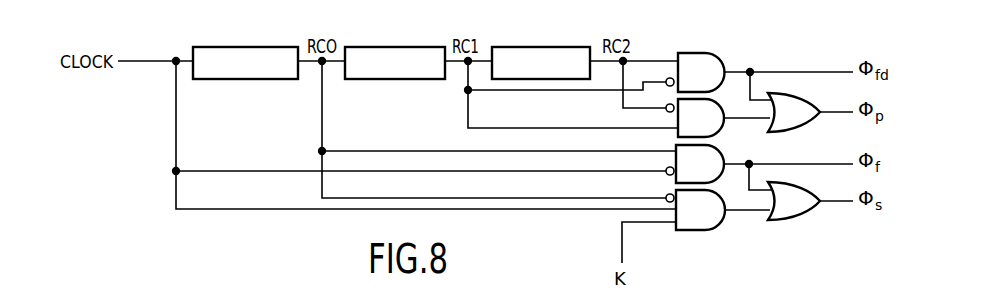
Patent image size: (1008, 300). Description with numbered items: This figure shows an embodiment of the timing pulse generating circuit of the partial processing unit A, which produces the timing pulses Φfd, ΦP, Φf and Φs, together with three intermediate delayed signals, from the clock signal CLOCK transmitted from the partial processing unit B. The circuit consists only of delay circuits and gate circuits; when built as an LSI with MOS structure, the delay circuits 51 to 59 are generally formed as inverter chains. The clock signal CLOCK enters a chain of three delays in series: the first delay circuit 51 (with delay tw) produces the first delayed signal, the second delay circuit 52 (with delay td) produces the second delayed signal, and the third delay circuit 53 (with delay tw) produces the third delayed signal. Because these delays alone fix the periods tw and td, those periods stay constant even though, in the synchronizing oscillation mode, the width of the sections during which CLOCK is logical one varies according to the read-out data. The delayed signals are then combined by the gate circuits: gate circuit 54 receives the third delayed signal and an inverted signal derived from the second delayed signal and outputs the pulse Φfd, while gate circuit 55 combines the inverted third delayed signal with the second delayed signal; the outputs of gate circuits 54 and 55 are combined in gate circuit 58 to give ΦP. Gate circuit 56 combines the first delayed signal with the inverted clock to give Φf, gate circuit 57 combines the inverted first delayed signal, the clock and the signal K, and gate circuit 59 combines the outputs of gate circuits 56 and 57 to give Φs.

The delay circuit 51 is at (243, 47).
The delay circuit 52 is at (404, 47).
The delay circuit 53 is at (545, 47).
The gate circuit 54 is at (693, 52).
The gate circuit 55 is at (695, 118).
The gate circuit 56 is at (695, 164).
The gate circuit 57 is at (695, 210).
The gate circuit 58 is at (794, 112).
The gate circuit 59 is at (794, 201).